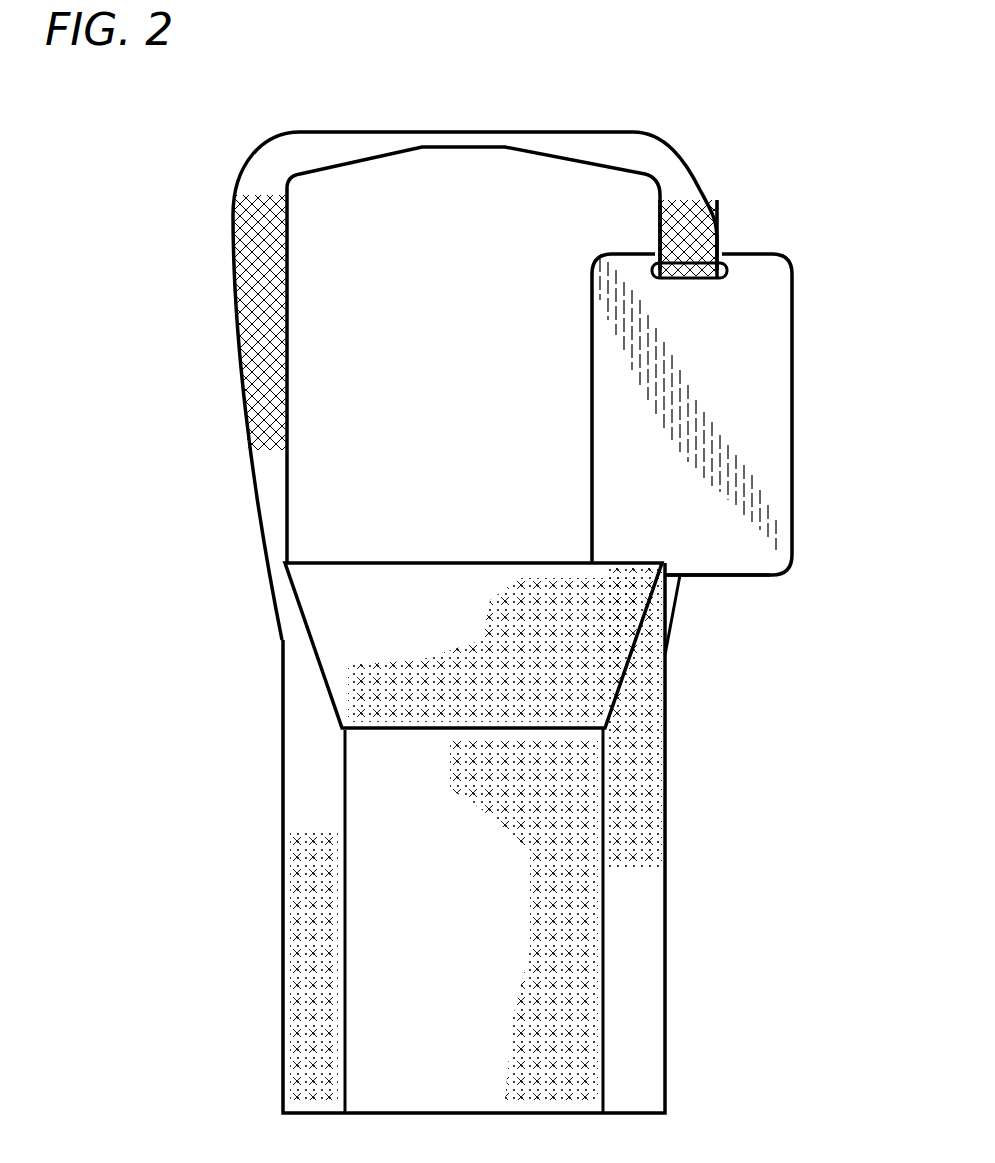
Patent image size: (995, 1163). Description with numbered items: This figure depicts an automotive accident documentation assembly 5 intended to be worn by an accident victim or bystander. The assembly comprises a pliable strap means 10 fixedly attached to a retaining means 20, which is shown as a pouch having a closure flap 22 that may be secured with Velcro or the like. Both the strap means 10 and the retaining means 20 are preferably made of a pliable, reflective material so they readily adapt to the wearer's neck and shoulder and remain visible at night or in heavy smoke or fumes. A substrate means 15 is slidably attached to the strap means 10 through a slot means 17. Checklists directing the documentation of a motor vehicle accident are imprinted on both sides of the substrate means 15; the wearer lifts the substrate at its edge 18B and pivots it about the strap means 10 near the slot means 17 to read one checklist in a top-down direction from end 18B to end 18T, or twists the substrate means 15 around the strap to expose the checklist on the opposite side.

The automotive documentation assembly 5 is at (208, 378).
The strap means 10 is at (232, 215).
The substrate means 15 is at (765, 375).
The slot means 17 is at (730, 270).
The end of substrate means 18T is at (635, 253).
The edge of substrate means 18B is at (730, 575).
The retaining means 20 is at (665, 946).
The closure flap 22 is at (410, 727).